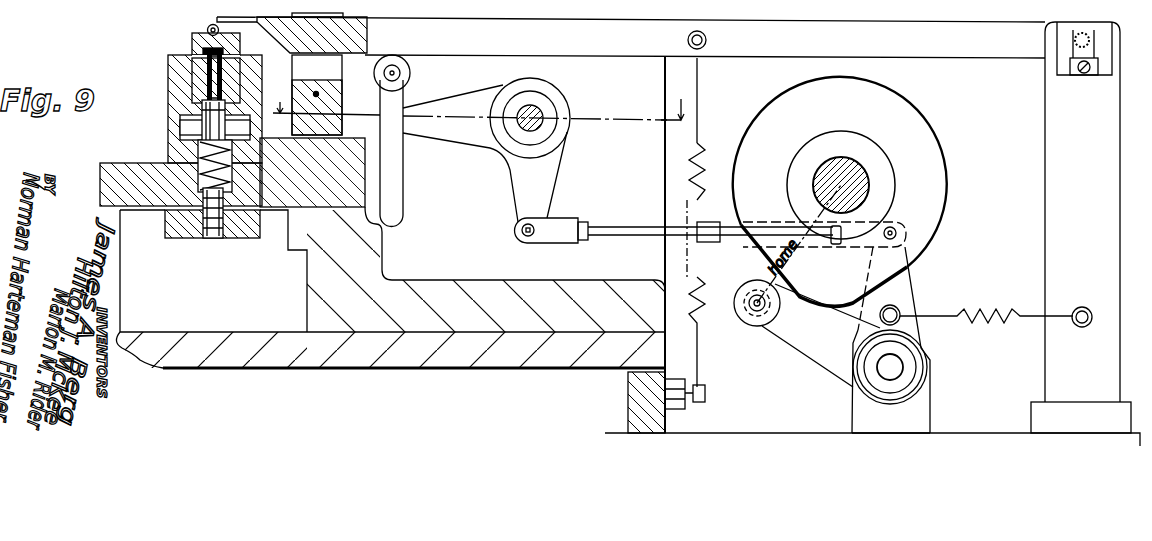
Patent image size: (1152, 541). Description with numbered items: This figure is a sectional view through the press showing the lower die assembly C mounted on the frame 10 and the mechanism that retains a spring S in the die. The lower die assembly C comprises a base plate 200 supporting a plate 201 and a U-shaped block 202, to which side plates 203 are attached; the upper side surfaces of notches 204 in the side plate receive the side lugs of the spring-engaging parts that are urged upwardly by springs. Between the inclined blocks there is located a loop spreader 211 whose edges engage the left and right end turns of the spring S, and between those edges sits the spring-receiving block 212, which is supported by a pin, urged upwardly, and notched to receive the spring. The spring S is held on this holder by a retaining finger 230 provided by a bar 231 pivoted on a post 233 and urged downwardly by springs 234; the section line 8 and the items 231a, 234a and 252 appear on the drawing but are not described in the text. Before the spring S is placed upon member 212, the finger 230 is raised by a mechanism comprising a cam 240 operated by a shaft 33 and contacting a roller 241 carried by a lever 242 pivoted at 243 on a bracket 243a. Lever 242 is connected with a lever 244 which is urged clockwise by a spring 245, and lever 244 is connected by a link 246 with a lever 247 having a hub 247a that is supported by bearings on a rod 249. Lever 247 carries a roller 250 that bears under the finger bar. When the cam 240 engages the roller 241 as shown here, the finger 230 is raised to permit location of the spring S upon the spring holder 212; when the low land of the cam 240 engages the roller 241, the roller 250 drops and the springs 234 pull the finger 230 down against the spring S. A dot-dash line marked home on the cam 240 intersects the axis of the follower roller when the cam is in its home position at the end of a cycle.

The section line 8- 8 is at (475, 100).
The frame 10 is at (448, 280).
The shaft 33 is at (847, 158).
The base plate 200 is at (110, 164).
The plate 201 is at (174, 238).
The U-shaped block 202 is at (198, 156).
The side plates 203 is at (171, 116).
The notches 204 is at (184, 133).
The loop spreader 211 is at (192, 94).
The spring-receiving block 212 is at (192, 42).
The retaining finger 230 is at (224, 19).
The bar 231 is at (792, 21).
The bar bracket 231a is at (333, 68).
The post 233 is at (1045, 149).
The springs 234 is at (702, 150).
The spring anchor pin 234a is at (688, 41).
The cam 240 is at (789, 97).
The roller 241 is at (779, 317).
The lever 242 is at (812, 362).
The pivot 243 is at (896, 367).
The bracket 243a is at (932, 417).
The lever 244 is at (913, 272).
The spring 245 is at (1015, 302).
The link 246 is at (653, 229).
The lever 247 is at (558, 173).
The hub 247a is at (555, 99).
The rod 249 is at (540, 124).
The roller 250 is at (411, 73).
The switch 252 is at (1084, 30).
The spring S is at (206, 28).
The lower die assembly C is at (100, 185).